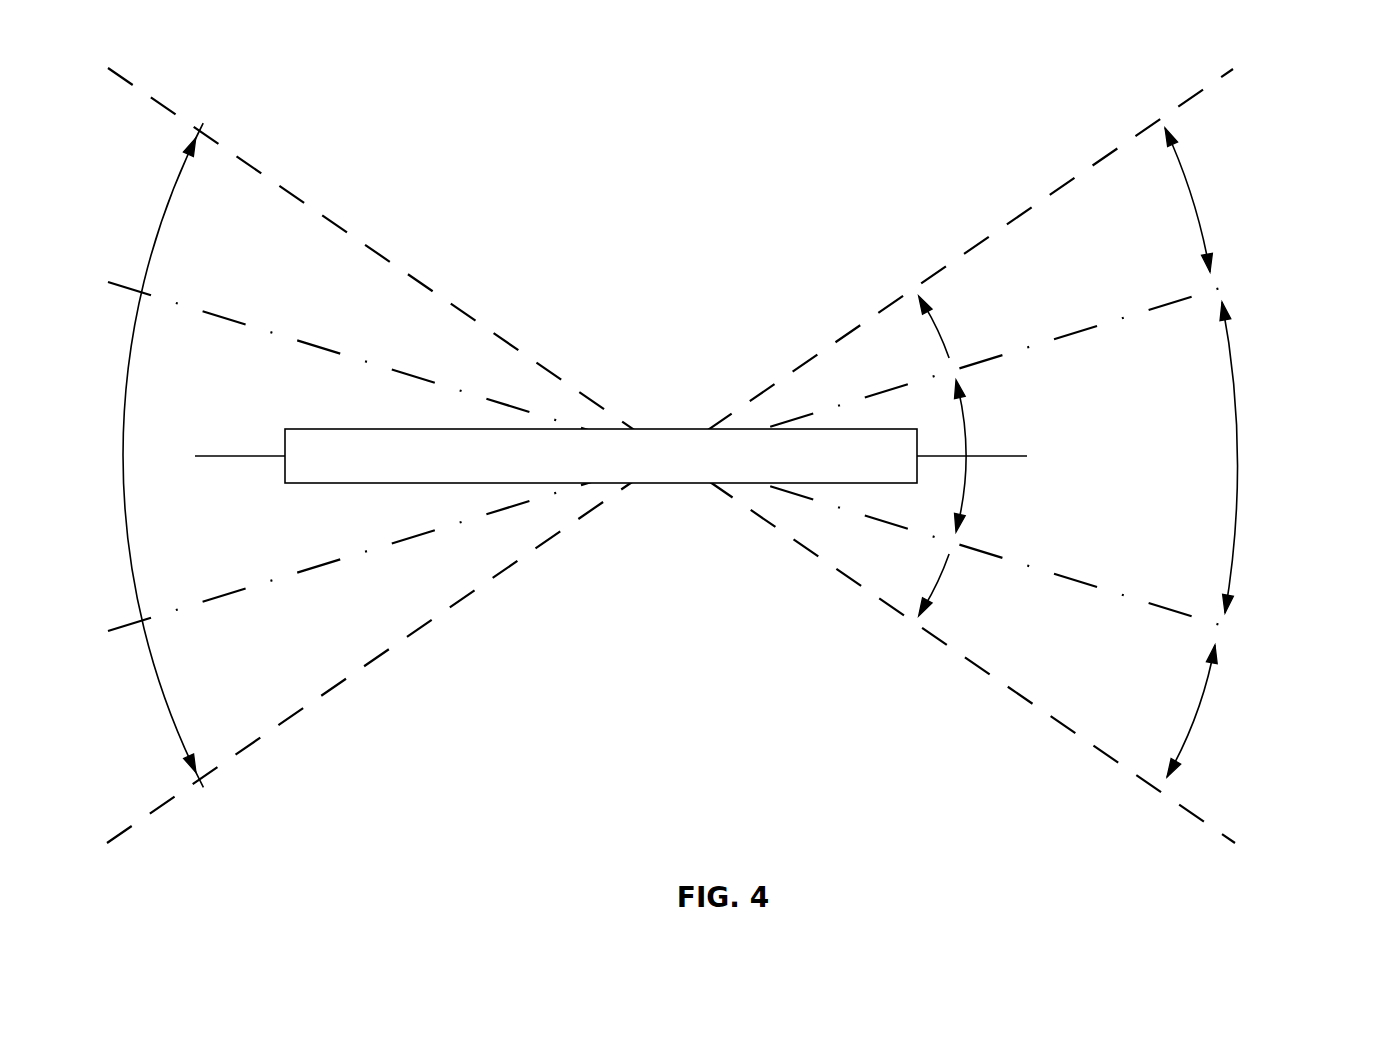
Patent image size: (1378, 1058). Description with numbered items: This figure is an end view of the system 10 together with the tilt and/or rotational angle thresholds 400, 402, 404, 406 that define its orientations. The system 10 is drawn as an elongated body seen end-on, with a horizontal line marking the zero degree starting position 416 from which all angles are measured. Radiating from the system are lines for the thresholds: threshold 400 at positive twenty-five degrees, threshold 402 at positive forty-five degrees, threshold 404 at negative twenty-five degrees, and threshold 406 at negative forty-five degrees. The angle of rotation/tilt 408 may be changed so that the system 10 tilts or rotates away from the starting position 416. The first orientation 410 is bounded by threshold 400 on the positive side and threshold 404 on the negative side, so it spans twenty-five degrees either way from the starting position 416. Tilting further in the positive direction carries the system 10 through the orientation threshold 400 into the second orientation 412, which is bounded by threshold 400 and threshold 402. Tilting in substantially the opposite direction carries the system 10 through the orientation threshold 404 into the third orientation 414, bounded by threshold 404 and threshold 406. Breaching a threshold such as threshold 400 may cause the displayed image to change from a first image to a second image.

The system 10 is at (601, 456).
The orientation threshold 400 is at (670, 450).
The threshold 402 is at (670, 456).
The orientation threshold 404 is at (670, 463).
The threshold 406 is at (671, 455).
The angle of rotation/tilt 408 is at (227, 496).
The first orientation 410 is at (1289, 457).
The second orientation 412 is at (1239, 200).
The third orientation 414 is at (1240, 711).
The starting position 416 is at (670, 457).